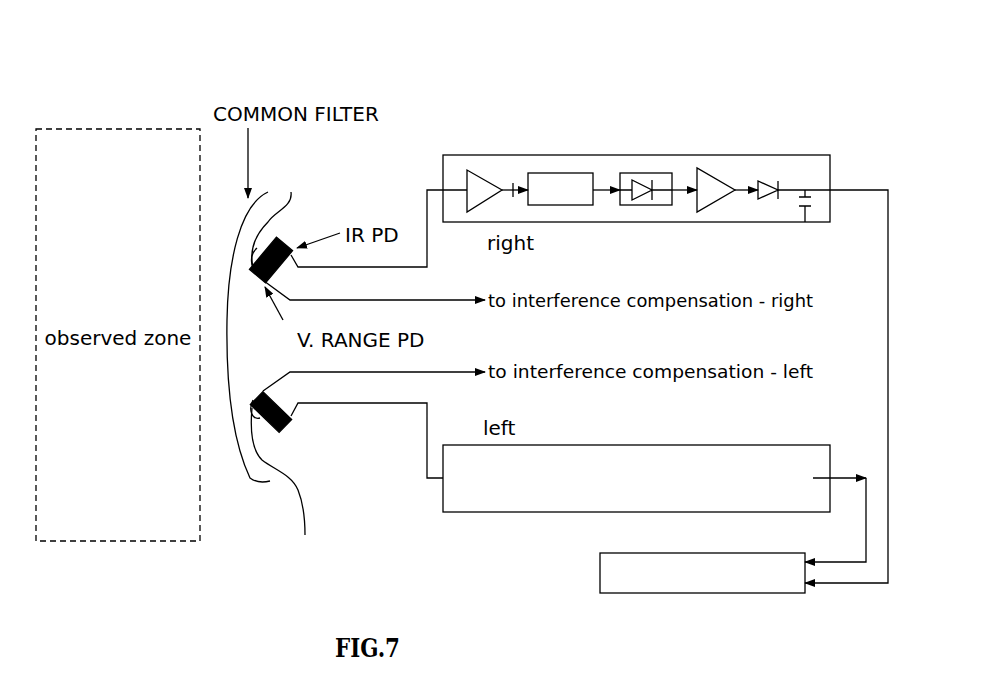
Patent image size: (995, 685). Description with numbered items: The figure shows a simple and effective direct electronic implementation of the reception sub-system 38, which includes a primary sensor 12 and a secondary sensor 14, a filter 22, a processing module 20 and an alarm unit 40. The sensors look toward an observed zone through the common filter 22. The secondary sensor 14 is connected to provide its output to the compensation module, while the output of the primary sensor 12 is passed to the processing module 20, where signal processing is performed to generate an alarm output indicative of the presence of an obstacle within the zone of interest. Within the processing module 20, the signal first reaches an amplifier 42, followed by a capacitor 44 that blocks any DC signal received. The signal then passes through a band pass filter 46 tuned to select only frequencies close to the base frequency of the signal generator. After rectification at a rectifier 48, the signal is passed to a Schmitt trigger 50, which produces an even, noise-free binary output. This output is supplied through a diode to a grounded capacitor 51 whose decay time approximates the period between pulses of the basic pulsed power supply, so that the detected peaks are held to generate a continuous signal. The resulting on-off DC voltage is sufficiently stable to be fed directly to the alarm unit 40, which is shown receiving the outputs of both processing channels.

The primary sensor 12 is at (272, 246).
The secondary sensor 14 is at (286, 362).
The processing module 20 is at (447, 155).
The filter 22 is at (256, 482).
The reception sub-system 38 is at (798, 75).
The alarm unit 40 is at (725, 594).
The amplifier 42 is at (485, 169).
The capacitor 44 is at (516, 182).
The band pass filter 46 is at (577, 173).
The rectifier 48 is at (640, 173).
The Schmitt trigger 50 is at (712, 168).
The grounded capacitor 51 is at (813, 221).